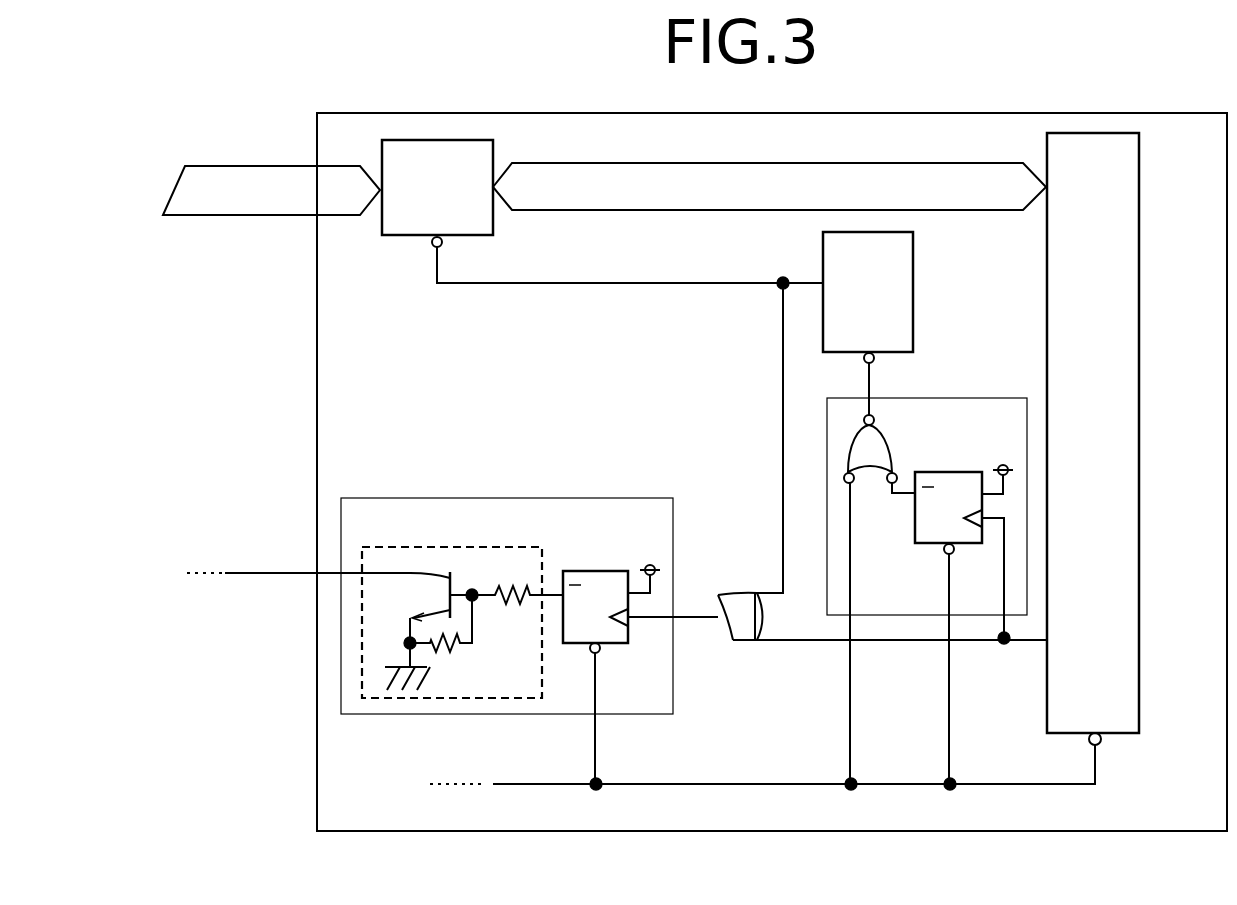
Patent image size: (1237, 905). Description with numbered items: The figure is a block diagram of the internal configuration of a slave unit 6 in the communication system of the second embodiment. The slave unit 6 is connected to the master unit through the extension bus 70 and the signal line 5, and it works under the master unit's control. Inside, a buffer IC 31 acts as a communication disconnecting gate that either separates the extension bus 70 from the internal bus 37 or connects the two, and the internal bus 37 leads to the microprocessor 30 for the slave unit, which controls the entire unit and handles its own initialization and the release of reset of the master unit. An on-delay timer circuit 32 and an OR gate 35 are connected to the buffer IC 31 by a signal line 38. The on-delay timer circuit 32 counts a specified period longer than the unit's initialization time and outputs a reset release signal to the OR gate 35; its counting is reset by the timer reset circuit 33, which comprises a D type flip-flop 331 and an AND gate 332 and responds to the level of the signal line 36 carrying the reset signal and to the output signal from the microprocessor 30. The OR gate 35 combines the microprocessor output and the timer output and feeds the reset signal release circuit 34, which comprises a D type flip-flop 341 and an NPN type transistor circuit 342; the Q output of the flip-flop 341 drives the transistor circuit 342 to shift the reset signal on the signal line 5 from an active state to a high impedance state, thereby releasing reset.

The slave unit 6 is at (608, 115).
The extension bus 70 is at (257, 166).
The buffer IC 31 is at (432, 139).
The internal bus 37 is at (875, 163).
The signal line 38 is at (545, 283).
The on-delay timer circuit 32 is at (915, 263).
The microprocessor for a slave unit 30 is at (1139, 237).
The timer reset circuit 33 is at (937, 574).
The AND gate 332 is at (883, 432).
The D type flip-flop 331 is at (967, 472).
The reset signal release circuit 34 is at (524, 641).
The NPN type transistor circuit 342 is at (427, 547).
The D type flip-flop 341 is at (613, 571).
The OR gate 35 is at (740, 623).
The signal line 5 is at (258, 575).
The signal line 36 is at (572, 788).